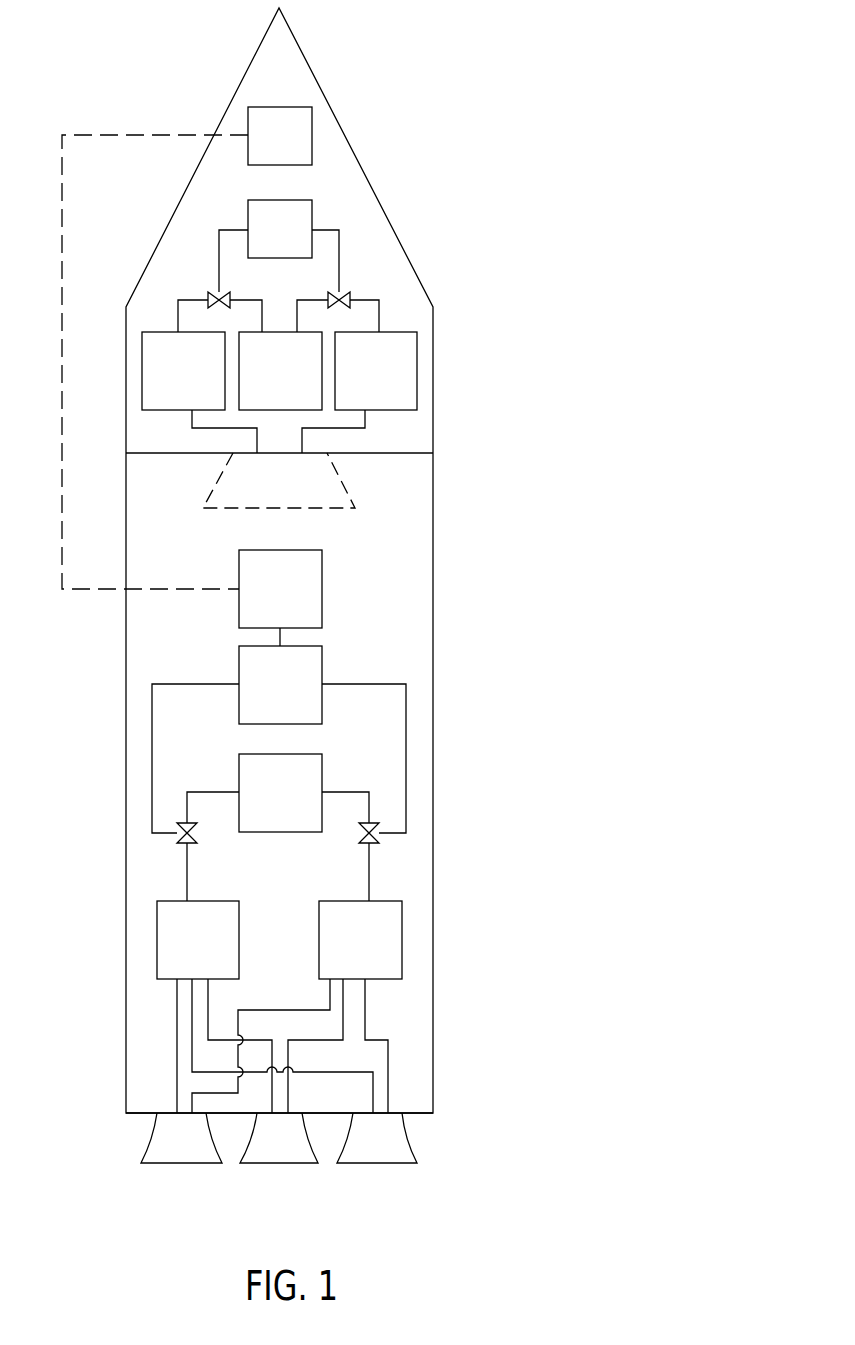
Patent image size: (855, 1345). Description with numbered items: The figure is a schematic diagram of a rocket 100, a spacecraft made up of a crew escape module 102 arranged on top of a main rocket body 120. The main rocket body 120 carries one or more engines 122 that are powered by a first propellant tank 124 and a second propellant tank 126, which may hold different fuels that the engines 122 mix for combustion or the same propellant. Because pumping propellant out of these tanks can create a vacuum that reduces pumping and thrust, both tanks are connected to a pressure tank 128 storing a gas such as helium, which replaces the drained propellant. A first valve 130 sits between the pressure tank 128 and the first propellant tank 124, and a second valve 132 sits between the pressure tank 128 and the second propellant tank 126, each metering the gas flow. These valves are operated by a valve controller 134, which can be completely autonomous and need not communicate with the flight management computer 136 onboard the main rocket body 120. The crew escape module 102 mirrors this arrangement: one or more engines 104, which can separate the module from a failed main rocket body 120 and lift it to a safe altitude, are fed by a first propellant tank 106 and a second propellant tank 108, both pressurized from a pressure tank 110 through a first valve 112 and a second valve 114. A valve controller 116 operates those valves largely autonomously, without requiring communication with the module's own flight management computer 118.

The rocket 100 is at (456, 87).
The crew escape module 102 is at (433, 430).
The engine 104 is at (318, 508).
The first propellant tank 106 is at (203, 381).
The second propellant tank 108 is at (395, 381).
The pressure tank 110 is at (300, 381).
The first valve 112 is at (208, 292).
The second valve 114 is at (350, 292).
The valve controller 116 is at (299, 239).
The flight management computer 118 is at (299, 146).
The main rocket body 120 is at (433, 612).
The engine 122 is at (177, 1165).
The first propellant tank 124 is at (217, 950).
The second propellant tank 126 is at (380, 950).
The pressure tank 128 is at (300, 803).
The first valve 130 is at (187, 838).
The second valve 132 is at (371, 840).
The valve controller 134 is at (300, 695).
The flight management computer 136 is at (300, 599).